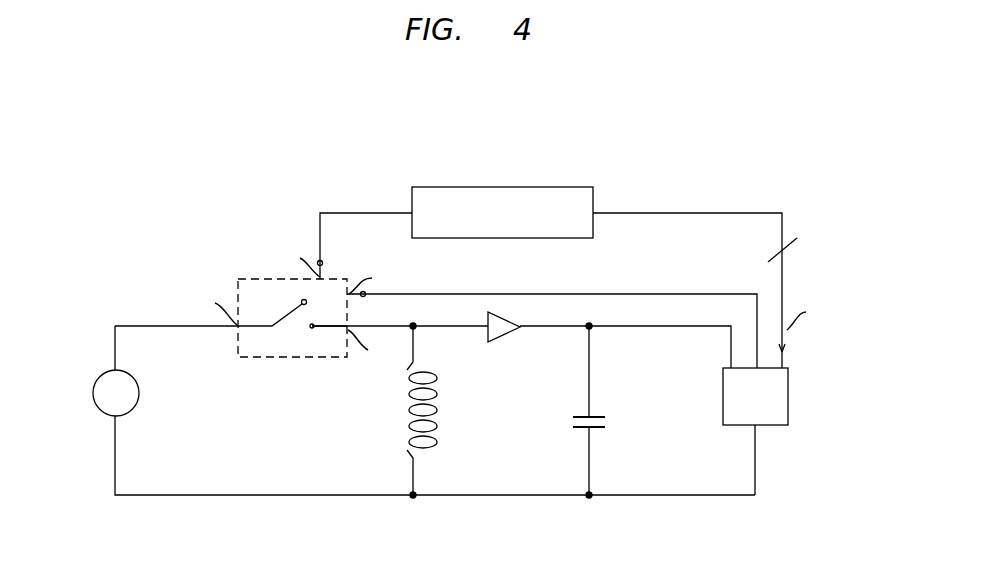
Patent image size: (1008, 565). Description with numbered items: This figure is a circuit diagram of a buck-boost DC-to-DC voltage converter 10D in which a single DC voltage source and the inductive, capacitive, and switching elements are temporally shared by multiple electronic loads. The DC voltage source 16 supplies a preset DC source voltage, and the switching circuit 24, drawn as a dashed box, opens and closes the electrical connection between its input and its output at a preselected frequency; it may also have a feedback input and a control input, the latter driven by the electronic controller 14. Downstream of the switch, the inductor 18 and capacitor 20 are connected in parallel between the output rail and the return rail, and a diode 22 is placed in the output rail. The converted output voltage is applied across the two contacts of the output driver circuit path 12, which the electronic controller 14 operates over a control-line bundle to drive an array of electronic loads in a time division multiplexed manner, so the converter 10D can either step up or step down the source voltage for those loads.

The DC-to-DC voltage converter 10D is at (781, 165).
The electronic controller 14 is at (598, 197).
The output driver circuit path 12 is at (769, 408).
The DC voltage source 16 is at (98, 410).
The inductor 18 is at (393, 438).
The capacitor 20 is at (558, 438).
The diode 22 is at (512, 338).
The switching circuit 24 is at (320, 358).